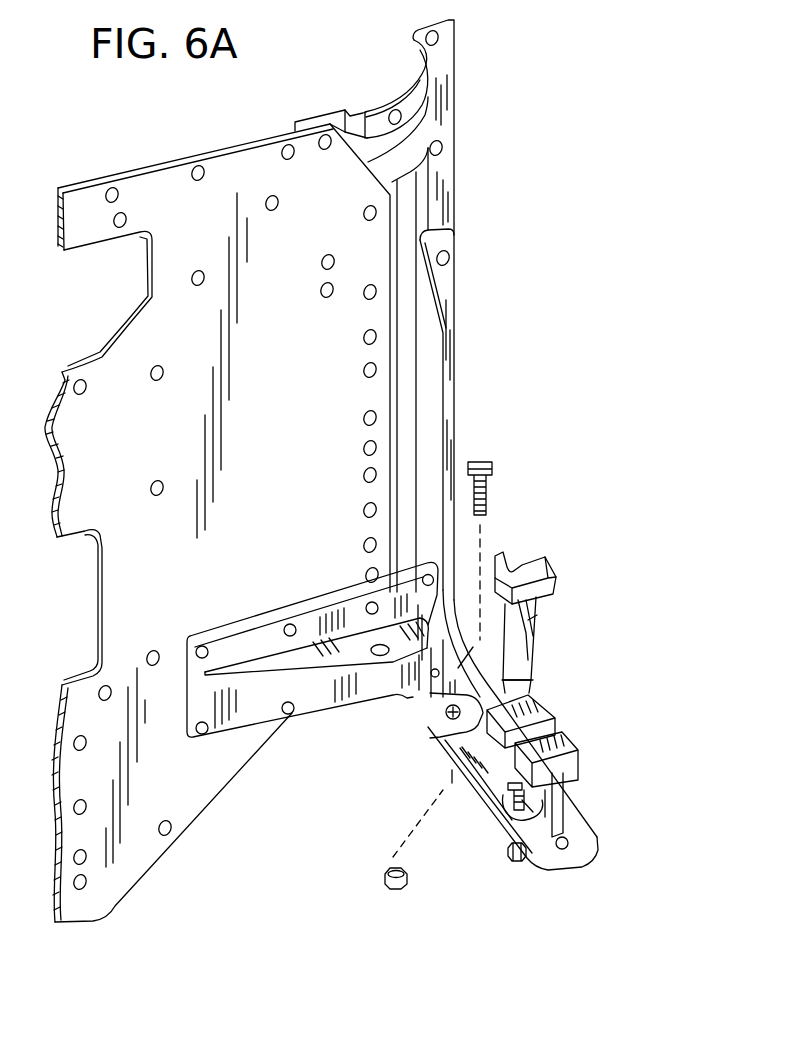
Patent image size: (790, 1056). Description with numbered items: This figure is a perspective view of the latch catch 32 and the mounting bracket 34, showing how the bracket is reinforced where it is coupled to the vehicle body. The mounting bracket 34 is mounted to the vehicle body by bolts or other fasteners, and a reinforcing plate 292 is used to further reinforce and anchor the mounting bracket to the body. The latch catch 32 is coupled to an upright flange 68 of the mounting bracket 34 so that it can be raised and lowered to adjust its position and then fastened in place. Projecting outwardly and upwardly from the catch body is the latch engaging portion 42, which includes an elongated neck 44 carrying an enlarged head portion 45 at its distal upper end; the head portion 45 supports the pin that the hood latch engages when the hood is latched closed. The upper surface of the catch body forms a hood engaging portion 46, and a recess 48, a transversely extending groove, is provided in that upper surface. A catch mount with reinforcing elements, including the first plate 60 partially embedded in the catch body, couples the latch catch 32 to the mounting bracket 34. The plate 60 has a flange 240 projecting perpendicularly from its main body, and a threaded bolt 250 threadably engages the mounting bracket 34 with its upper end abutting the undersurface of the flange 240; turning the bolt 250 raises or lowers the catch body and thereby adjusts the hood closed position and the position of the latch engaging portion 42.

The reinforcing plate 292 is at (247, 705).
The head portion 45 is at (503, 557).
The neck 44 is at (525, 660).
The latch engaging portion 42 is at (533, 642).
The recess 48 is at (545, 723).
The hood engaging portion 46 is at (560, 737).
The upright flange 68 is at (558, 797).
The mounting bracket 34 is at (572, 813).
The flange 240 is at (509, 790).
The first plate 60 is at (530, 803).
The threaded bolt 250 is at (522, 868).
The latch catch 32 is at (497, 858).